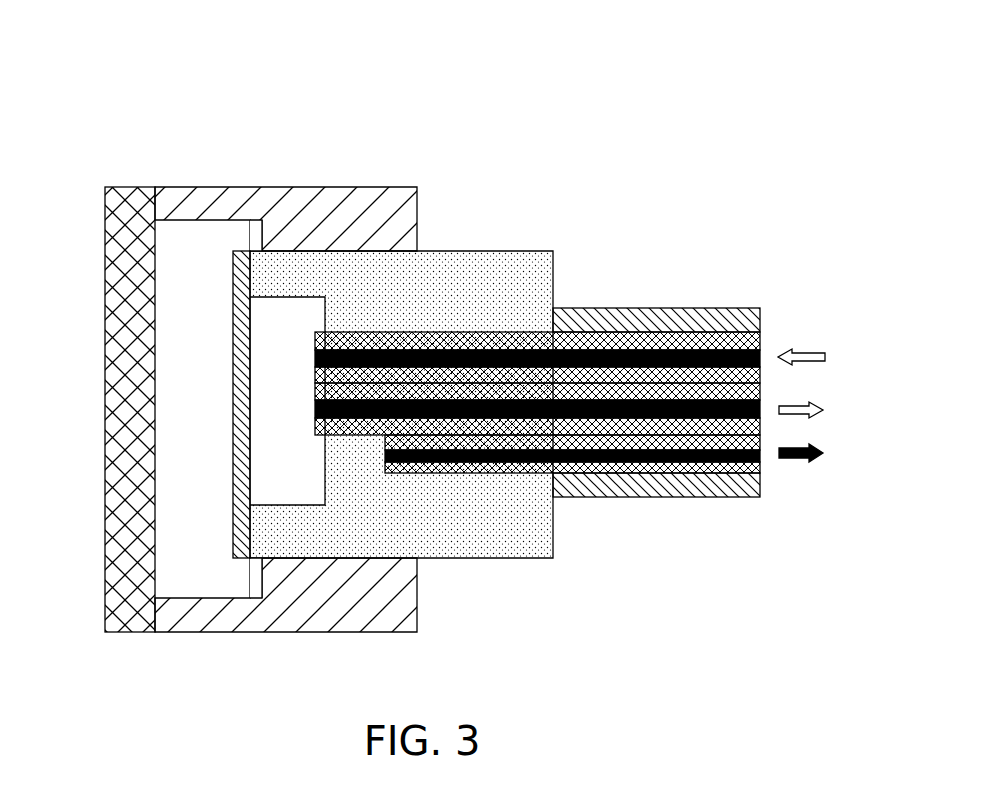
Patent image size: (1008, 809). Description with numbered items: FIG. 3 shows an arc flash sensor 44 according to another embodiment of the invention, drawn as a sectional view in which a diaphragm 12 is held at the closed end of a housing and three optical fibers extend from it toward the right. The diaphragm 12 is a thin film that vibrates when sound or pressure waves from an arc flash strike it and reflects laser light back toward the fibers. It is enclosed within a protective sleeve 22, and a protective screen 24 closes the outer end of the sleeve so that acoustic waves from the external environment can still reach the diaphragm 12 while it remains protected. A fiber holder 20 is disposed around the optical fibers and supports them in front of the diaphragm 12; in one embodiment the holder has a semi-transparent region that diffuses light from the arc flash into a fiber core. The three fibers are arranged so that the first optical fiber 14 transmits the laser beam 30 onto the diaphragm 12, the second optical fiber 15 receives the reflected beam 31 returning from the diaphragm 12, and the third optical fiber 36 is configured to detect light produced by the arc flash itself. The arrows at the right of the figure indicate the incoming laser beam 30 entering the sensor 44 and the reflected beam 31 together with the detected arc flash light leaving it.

The diaphragm 12 is at (234, 268).
The first optical fiber 14 is at (722, 350).
The second optical fiber 15 is at (758, 377).
The fiber holder 20 is at (527, 560).
The protective sleeve 22 is at (272, 622).
The protective screen 24 is at (105, 603).
The laser beam 30 is at (808, 352).
The reflected beam 31 is at (797, 413).
The third optical fiber 36 is at (732, 473).
The sensor 44 is at (713, 72).